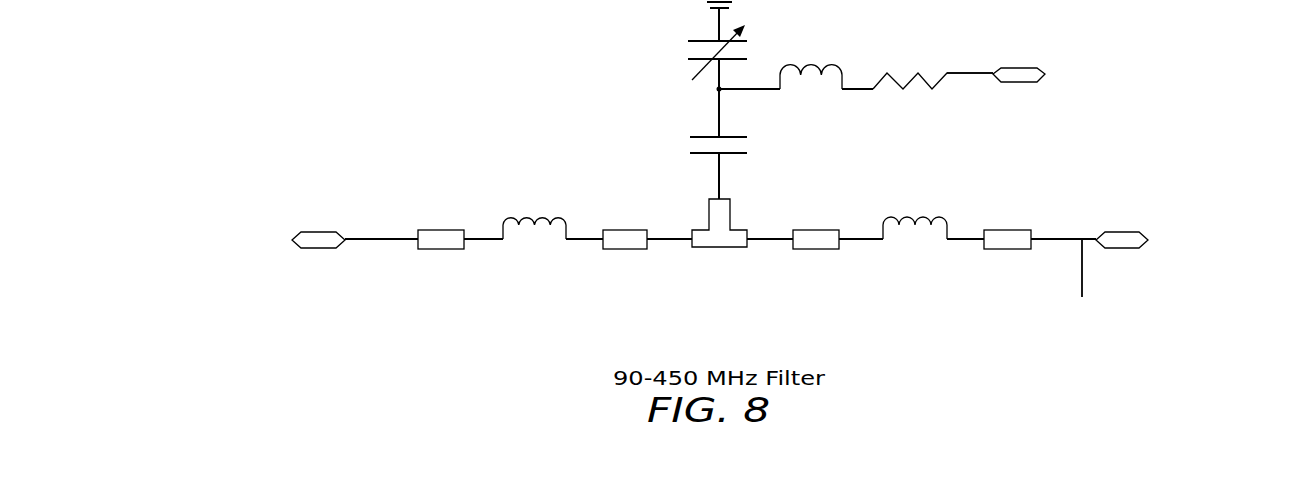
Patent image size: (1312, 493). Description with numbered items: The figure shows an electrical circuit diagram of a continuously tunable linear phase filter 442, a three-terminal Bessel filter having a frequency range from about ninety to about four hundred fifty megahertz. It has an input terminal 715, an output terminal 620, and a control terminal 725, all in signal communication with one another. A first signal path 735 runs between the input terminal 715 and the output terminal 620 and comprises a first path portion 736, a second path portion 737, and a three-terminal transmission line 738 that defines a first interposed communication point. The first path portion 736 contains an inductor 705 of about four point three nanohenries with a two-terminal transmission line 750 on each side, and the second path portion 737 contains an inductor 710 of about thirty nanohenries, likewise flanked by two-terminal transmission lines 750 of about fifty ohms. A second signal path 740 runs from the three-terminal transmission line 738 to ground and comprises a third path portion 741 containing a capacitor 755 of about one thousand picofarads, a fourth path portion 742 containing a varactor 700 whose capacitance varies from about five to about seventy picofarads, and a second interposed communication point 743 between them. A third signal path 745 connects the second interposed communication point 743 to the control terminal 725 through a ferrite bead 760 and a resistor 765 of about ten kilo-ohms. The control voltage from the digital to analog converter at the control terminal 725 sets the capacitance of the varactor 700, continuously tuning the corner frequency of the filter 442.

The continuously tunable linear phase filter 442 is at (482, 102).
The output terminal 620 is at (1122, 250).
The varactor diode 700 is at (692, 78).
The inductor 705 is at (510, 215).
The inductor 710 is at (937, 215).
The input terminal 715 is at (313, 250).
The control terminal 725 is at (1040, 80).
The first signal path 735 is at (358, 252).
The first path portion 736 is at (396, 239).
The second path portion 737 is at (1089, 283).
The three-terminal transmission line 738 is at (712, 249).
The second signal path 740 is at (728, 190).
The third path portion 741 is at (718, 170).
The fourth path portion 742 is at (718, 25).
The second interposed communication point 743 is at (712, 89).
The third signal path 745 is at (975, 82).
The two-terminal transmission line 750 is at (455, 230).
The capacitor 755 is at (747, 137).
The ferrite bead 760 is at (818, 65).
The resistor 765 is at (910, 89).